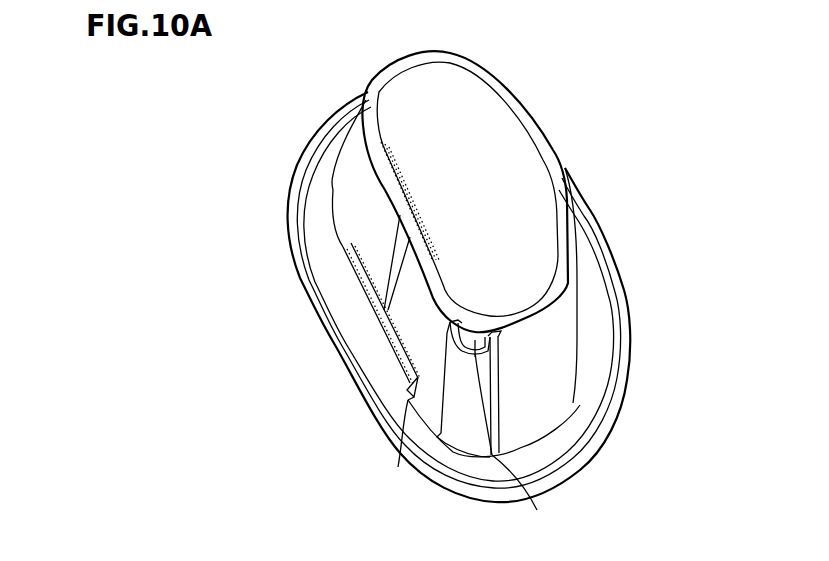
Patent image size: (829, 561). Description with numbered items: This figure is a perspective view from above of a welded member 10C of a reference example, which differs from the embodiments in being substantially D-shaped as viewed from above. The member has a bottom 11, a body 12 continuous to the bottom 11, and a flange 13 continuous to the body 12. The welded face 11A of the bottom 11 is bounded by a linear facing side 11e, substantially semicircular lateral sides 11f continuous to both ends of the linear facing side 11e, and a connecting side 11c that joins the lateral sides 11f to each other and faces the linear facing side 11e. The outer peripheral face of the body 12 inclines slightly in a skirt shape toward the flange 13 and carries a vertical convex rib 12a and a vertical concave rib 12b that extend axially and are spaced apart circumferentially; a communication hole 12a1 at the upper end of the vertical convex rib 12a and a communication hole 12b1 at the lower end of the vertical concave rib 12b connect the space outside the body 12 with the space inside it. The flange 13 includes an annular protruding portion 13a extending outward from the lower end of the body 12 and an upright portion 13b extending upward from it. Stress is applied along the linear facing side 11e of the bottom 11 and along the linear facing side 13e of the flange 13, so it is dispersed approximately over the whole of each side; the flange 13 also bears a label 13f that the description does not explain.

The welded member 10C is at (547, 79).
The bottom 11 is at (453, 54).
The welded face 11A is at (480, 103).
The connecting side 11c is at (553, 150).
The linear facing side 11e is at (377, 168).
The lateral sides 11f is at (373, 78).
The body 12 is at (403, 457).
The vertical convex rib 12a is at (463, 433).
The communication hole 12a1 is at (537, 510).
The vertical concave rib 12b is at (397, 260).
The communication hole 12b1 is at (377, 308).
The flange 13 is at (290, 210).
The protruding portion 13a is at (598, 349).
The upright portion 13b is at (620, 383).
The linear facing side 13e is at (340, 233).
The flange 13f is at (602, 414).